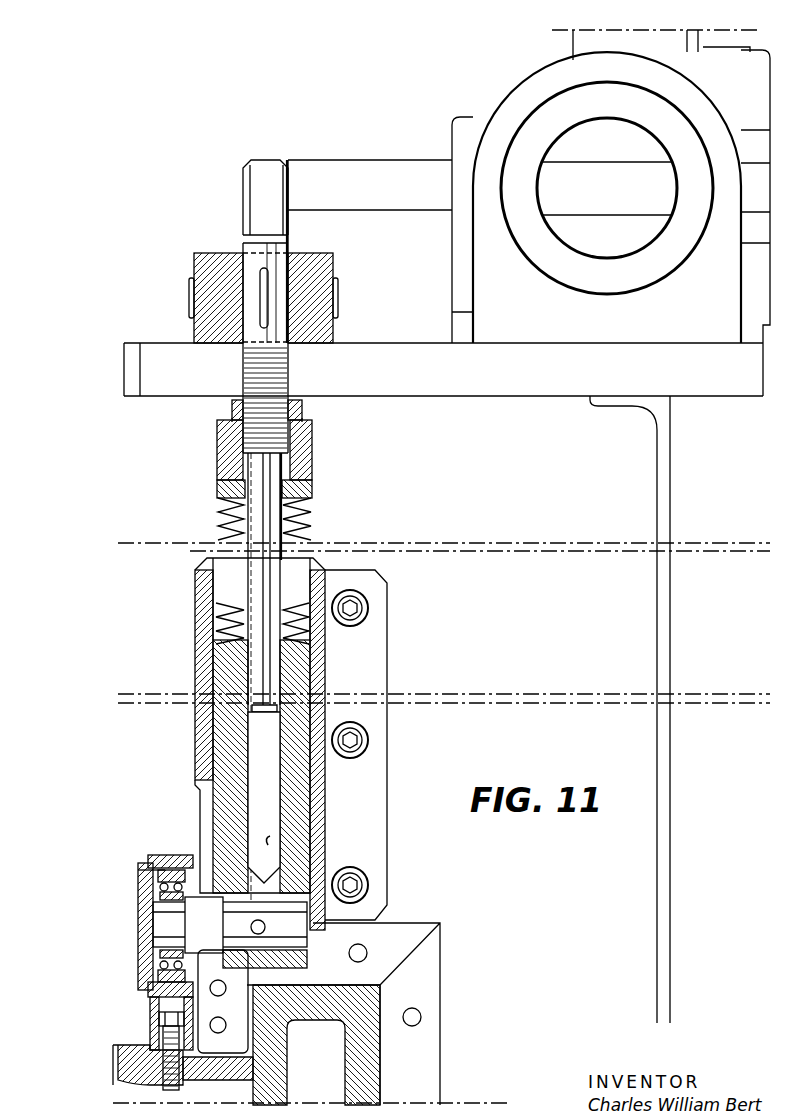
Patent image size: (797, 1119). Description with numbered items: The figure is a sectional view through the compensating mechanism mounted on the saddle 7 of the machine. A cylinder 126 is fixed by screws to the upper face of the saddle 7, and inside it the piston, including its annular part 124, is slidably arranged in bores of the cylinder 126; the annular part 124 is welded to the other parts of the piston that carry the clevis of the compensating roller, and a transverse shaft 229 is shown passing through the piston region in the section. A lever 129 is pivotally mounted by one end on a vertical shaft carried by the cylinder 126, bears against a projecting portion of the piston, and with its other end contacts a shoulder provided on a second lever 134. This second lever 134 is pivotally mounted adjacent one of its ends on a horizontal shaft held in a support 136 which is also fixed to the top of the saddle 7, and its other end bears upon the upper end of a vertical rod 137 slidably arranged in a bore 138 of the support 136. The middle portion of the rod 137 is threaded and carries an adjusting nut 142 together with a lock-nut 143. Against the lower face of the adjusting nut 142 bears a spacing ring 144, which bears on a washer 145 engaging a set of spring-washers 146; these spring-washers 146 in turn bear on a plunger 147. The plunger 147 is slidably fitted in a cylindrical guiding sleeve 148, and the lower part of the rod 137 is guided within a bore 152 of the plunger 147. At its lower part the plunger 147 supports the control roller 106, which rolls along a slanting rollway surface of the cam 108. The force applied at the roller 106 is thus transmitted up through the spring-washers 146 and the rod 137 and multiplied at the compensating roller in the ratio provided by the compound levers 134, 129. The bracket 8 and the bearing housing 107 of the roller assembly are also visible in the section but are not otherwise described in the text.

The saddle 7 is at (383, 353).
The base bracket 8 is at (267, 1077).
The control roller 106 is at (165, 853).
The bearing housing 107 is at (137, 882).
The cam 108 is at (156, 1022).
The annular part 124 is at (617, 285).
The cylinder 126 is at (708, 310).
The lever 129 is at (357, 173).
The second lever 134 is at (258, 202).
The support 136 is at (327, 268).
The vertical rod 137 is at (290, 350).
The bore 138 is at (247, 272).
The adjusting nut 142 is at (312, 418).
The lock-nut 143 is at (302, 405).
The spacing ring 144 is at (312, 472).
The washer 145 is at (313, 492).
The spring-washers 146 is at (312, 535).
The plunger 147 is at (300, 673).
The cylindrical guiding sleeve 148 is at (322, 782).
The bore 152 is at (270, 843).
The shaft 229 is at (607, 173).